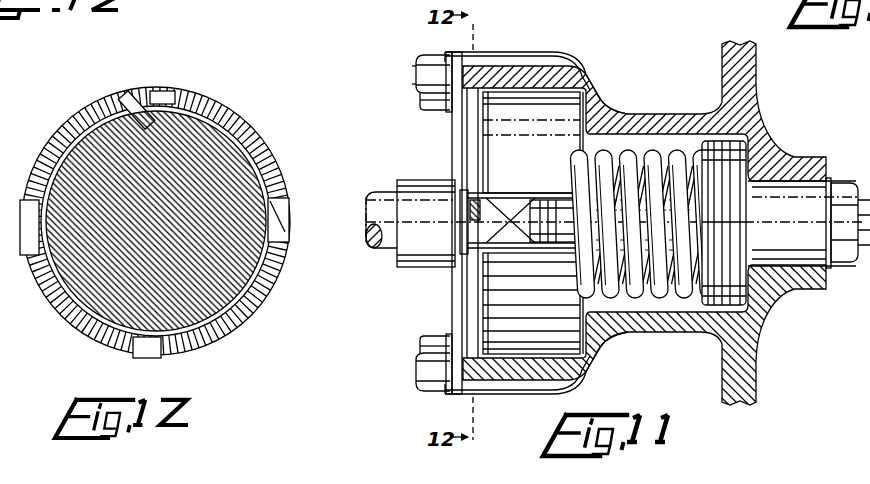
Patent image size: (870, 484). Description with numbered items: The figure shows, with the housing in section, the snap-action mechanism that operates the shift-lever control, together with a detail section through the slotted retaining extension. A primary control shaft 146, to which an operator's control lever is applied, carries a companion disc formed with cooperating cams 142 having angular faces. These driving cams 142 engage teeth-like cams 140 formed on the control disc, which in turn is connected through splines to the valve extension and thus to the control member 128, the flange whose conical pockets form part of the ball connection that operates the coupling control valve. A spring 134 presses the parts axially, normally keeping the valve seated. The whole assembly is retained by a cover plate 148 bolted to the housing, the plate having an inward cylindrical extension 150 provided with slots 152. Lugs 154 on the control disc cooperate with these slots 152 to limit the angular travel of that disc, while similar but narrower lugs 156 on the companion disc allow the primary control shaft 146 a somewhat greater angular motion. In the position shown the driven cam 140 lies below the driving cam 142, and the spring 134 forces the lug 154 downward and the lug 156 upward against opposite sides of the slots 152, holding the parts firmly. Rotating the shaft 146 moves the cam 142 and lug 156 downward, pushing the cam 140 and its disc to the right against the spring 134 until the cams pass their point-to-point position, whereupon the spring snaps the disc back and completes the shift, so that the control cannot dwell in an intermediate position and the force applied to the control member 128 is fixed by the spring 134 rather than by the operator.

In FIG. 11, the flange 128 is at (707, 310).
In FIG. 11, the spring 134 is at (631, 152).
In FIG. 11, the teeth-like cams 140 is at (532, 240).
In FIG. 11, the cooperating cams 142 is at (490, 178).
In FIG. 11, the primary control shaft 146 is at (380, 248).
In FIG. 11, the cover plate 148 is at (455, 124).
In FIG. 12, the inward cylindrical extension 150 is at (228, 118).
In FIG. 11, the inward cylindrical extension 150 is at (578, 80).
In FIG. 12, the slots 152 is at (180, 66).
In FIG. 11, the slots 152 is at (556, 252).
In FIG. 11, the lugs 154 is at (528, 198).
In FIG. 12, the narrower lugs 156 is at (275, 204).
In FIG. 11, the narrower lugs 156 is at (457, 196).